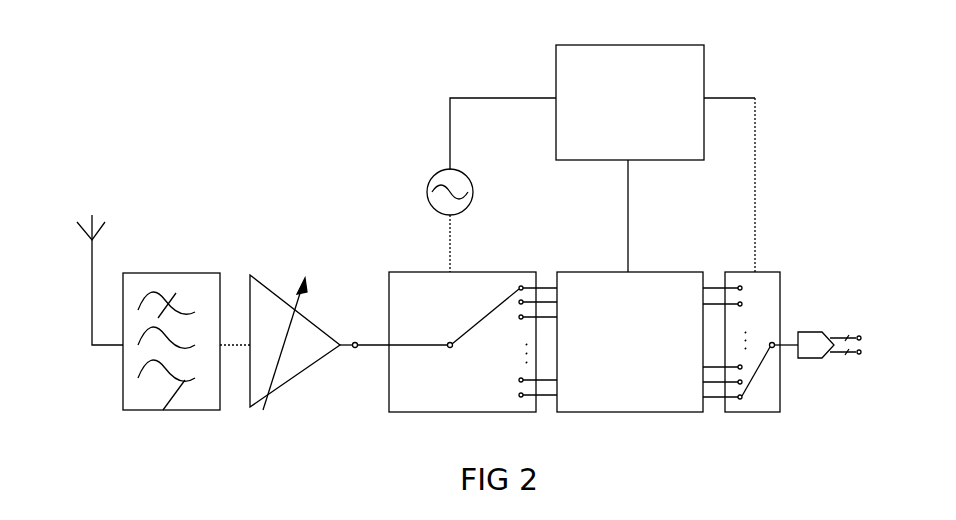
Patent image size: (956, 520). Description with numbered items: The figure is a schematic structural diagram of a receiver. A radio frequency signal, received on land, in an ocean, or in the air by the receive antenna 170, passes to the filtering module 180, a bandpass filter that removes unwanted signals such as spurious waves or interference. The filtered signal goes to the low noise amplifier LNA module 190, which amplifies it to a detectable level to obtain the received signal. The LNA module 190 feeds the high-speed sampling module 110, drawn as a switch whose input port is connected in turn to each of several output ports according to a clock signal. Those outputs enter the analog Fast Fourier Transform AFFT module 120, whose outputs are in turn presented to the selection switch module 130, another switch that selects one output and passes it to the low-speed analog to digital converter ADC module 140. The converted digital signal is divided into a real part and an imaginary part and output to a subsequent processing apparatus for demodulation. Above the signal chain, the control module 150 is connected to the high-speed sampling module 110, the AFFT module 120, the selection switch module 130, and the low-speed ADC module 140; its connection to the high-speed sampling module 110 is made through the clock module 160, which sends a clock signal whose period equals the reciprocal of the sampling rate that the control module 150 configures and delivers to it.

The high-speed sampling module 110 is at (472, 272).
The analog Fast Fourier Transform AFFT module 120 is at (640, 272).
The selection switch module 130 is at (770, 272).
The low-speed analog to digital converter ADC module 140 is at (815, 332).
The control module 150 is at (633, 45).
The clock module 160 is at (453, 170).
The receive antenna 170 is at (108, 242).
The filtering module 180 is at (160, 273).
The low noise amplifier LNA module 190 is at (263, 282).